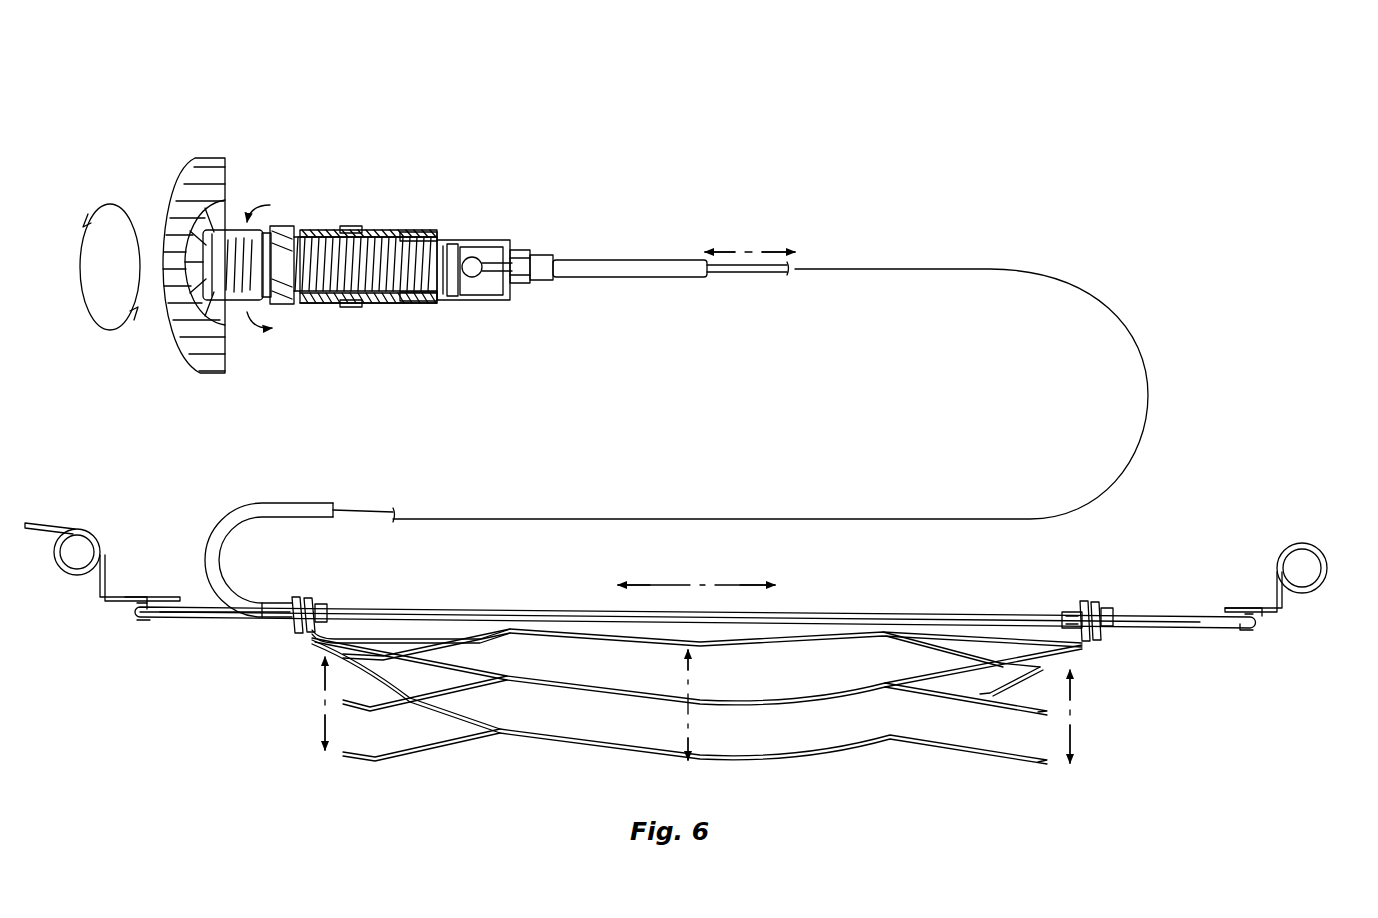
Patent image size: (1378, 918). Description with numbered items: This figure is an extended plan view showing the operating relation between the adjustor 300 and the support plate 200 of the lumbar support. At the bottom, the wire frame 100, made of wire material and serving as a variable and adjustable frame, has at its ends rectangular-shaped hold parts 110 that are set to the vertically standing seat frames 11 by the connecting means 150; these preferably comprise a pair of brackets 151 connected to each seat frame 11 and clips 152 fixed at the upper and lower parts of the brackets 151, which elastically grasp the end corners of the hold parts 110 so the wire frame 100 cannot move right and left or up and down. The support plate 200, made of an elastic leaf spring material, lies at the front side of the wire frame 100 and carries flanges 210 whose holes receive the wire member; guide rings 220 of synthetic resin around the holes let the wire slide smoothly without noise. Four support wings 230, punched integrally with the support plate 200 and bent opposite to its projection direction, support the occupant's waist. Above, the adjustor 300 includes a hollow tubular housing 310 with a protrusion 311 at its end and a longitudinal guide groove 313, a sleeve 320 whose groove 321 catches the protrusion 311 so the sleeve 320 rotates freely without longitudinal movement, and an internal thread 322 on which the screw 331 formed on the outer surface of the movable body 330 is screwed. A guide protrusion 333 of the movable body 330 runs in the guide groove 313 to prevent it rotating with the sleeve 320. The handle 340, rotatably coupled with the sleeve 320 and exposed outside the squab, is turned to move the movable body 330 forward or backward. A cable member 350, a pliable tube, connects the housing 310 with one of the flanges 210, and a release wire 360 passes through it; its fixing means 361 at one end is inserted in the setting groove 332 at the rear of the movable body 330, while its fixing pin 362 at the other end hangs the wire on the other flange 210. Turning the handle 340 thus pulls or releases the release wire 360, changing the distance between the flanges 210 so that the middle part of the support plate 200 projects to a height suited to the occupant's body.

The seat frame 11 is at (58, 567).
The wire frame 100 is at (207, 622).
The hold part 110 is at (172, 621).
The connecting means 150 is at (136, 623).
The bracket 151 is at (112, 597).
The clip 152 is at (132, 610).
The support plate 200 is at (827, 695).
The flange 210 is at (306, 597).
The guide ring 220 is at (306, 633).
The support wing 230 is at (1030, 674).
The adjustor 300 is at (540, 320).
The housing 310 is at (362, 235).
The protrusion 311 is at (312, 230).
The longitudinal guide groove 313 is at (408, 231).
The sleeve 320 is at (243, 229).
The groove 321 is at (272, 230).
The internal thread 322 is at (372, 228).
The movable body 330 is at (485, 298).
The screw 331 is at (356, 304).
The setting groove 332 is at (530, 250).
The guide protrusion 333 is at (462, 241).
The handle 340 is at (178, 190).
The cable member 350 is at (622, 262).
The release wire 360 is at (764, 268).
The fixing means 361 is at (462, 294).
The fixing pin 362 is at (1082, 602).